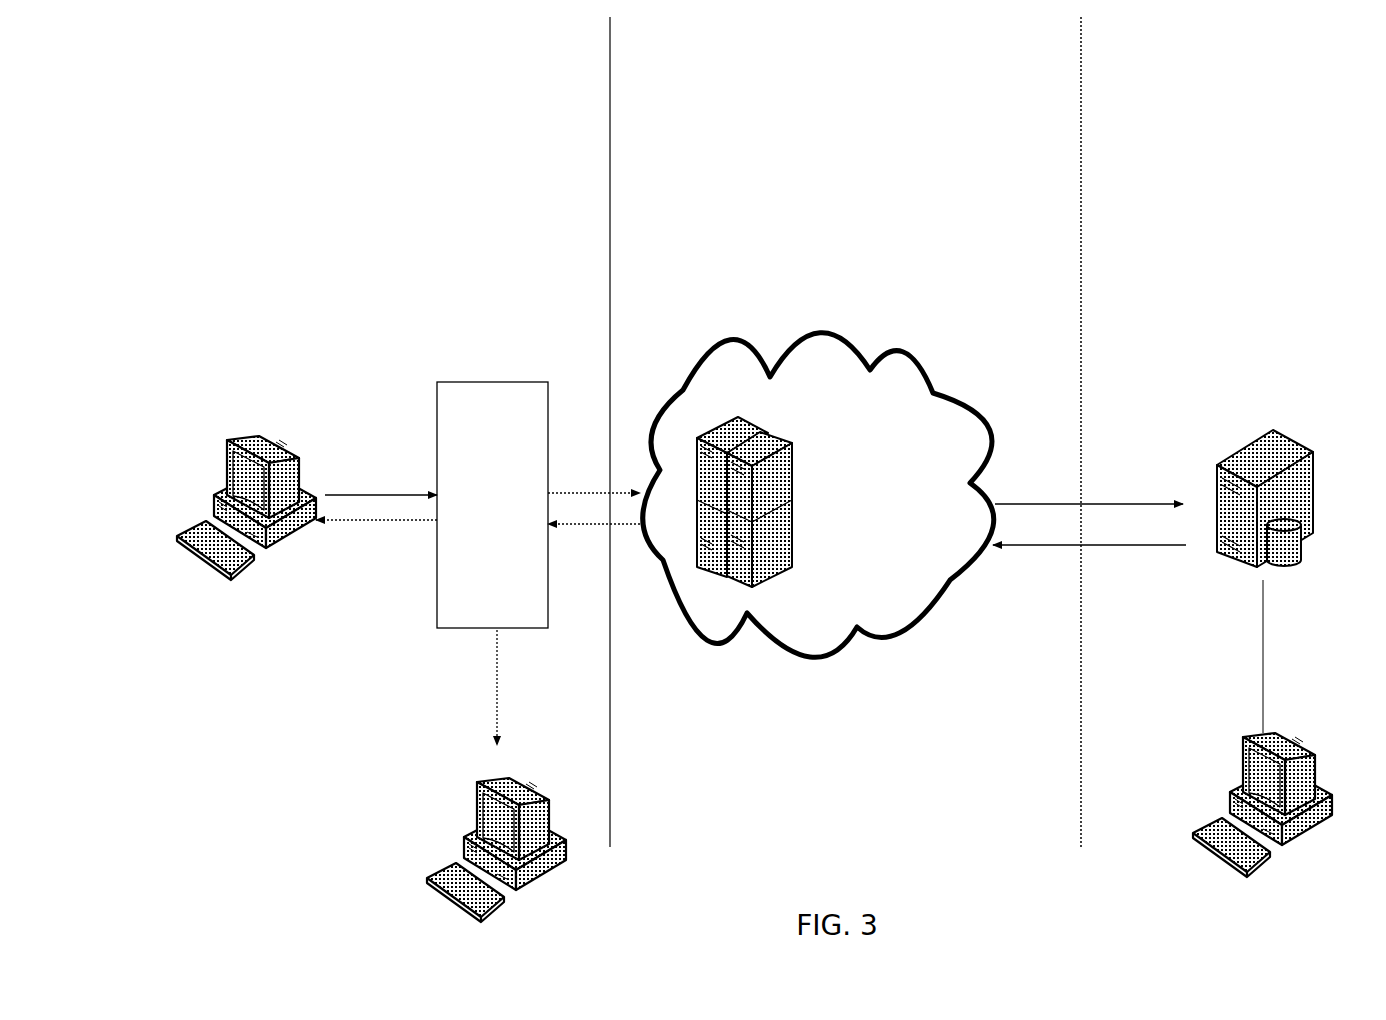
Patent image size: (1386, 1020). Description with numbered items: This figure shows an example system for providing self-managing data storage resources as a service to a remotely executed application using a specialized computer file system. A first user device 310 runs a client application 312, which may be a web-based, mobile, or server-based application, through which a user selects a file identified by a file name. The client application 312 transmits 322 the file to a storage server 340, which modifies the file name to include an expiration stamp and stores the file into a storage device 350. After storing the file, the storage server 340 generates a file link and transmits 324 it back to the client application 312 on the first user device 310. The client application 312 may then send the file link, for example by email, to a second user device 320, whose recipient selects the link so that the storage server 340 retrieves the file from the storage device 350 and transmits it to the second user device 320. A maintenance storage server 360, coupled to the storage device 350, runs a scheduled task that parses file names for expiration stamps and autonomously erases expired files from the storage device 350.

The first user device 310 is at (225, 478).
The client application 312 is at (492, 380).
The second user device 320 is at (478, 778).
The transmitting the file 322 is at (385, 492).
The transmitting the file link 324 is at (370, 522).
The storage server 340 is at (1117, 503).
The storage device 350 is at (1312, 582).
The maintenance storage server 360 is at (1242, 738).